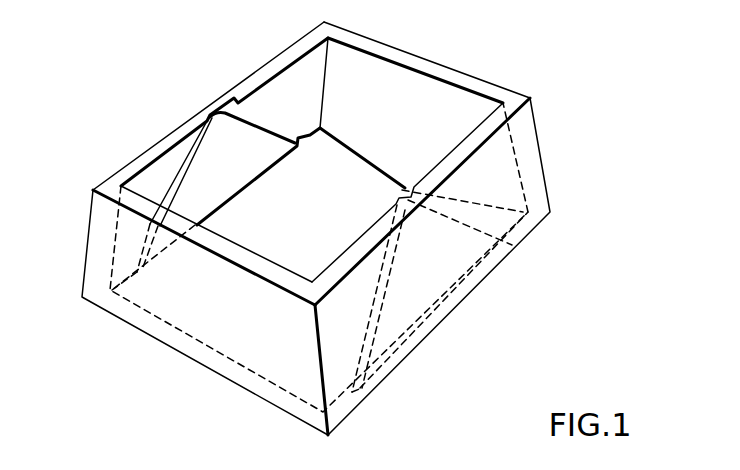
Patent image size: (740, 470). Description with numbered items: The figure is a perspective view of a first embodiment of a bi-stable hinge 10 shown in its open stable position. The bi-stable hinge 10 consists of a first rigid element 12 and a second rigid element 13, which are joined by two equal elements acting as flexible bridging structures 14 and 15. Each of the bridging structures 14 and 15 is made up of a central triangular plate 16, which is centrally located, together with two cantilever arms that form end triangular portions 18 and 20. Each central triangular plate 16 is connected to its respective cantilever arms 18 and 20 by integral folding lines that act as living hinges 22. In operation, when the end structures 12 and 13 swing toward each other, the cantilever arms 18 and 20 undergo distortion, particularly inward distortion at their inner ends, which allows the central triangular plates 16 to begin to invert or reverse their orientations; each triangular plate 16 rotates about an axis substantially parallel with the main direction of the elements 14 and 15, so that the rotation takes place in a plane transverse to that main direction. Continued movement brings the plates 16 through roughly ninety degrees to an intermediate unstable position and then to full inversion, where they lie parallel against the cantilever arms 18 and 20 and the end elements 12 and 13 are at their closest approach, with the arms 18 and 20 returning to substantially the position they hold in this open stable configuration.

The bi-stable hinge 10 is at (544, 101).
The first rigid element 12 is at (437, 100).
The second rigid element 13 is at (213, 300).
The flexible bridging structure 14 is at (488, 285).
The flexible bridging structure 15 is at (213, 97).
The central triangular plate 16 is at (232, 155).
The cantilever arm 18 is at (340, 350).
The cantilever arm 20 is at (288, 88).
The living hinge 22 is at (170, 178).